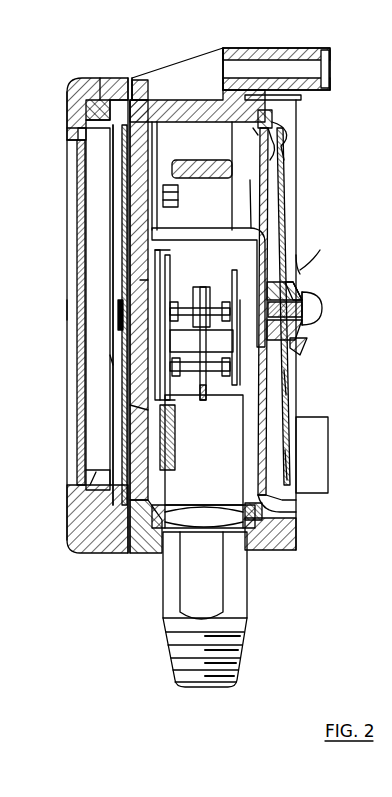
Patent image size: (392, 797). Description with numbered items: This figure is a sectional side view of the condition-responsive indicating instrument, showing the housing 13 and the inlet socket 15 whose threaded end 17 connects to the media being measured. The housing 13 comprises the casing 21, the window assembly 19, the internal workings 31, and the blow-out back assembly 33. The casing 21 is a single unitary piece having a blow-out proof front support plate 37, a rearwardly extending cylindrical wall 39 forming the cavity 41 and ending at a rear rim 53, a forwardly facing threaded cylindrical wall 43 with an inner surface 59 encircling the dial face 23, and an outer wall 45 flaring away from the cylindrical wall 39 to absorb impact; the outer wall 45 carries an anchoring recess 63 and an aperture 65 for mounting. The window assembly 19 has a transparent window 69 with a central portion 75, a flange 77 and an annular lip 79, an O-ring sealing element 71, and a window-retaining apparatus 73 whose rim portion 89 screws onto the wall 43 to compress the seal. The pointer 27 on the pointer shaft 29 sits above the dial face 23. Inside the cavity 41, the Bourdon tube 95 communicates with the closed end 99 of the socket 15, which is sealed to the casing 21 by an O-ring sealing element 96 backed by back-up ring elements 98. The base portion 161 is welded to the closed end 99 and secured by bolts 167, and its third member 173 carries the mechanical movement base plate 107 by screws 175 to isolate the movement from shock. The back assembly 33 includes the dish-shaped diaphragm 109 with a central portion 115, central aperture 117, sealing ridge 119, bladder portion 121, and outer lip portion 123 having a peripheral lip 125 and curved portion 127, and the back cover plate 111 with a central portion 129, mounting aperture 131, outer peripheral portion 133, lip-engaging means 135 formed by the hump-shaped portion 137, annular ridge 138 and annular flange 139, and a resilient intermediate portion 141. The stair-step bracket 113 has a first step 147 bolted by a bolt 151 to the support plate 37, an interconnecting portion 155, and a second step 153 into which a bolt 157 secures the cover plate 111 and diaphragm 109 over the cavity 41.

The housing 13 is at (375, 102).
The inlet socket 15 is at (268, 612).
The threaded end 17 is at (236, 664).
The window assembly 19 is at (62, 192).
The casing 21 is at (306, 44).
The dial face 23 is at (120, 385).
The pointer 27 is at (110, 360).
The pointer shaft 29 is at (118, 318).
The internal workings 31 is at (246, 360).
The blow-out back assembly 33 is at (312, 238).
The front support plate 37 is at (137, 78).
The cylindrical wall 39 is at (193, 108).
The cavity 41 is at (165, 135).
The threaded cylindrical wall 43 is at (93, 100).
The outer wall 45 is at (229, 44).
The rear rim 53 is at (300, 530).
The inner surface 59 is at (121, 553).
The anchoring recess 63 is at (198, 62).
The aperture 65 is at (276, 70).
The window 69 is at (64, 460).
The O-ring sealing element 71 is at (93, 553).
The window-retaining apparatus 73 is at (71, 68).
The central portion 75 is at (80, 429).
The flange 77 is at (78, 131).
The annular lip 79 is at (97, 135).
The rim portion 89 is at (104, 78).
The Bourdon tube 95 is at (186, 160).
The O-ring sealing element 96 is at (170, 520).
The back-up ring elements 98 is at (165, 540).
The closed end 99 is at (216, 486).
The mechanical movement base plate 107 is at (178, 412).
The diaphragm 109 is at (290, 158).
The back cover plate 111 is at (283, 177).
The bracket 113 is at (243, 232).
The central portion 115 is at (270, 275).
The central aperture 117 is at (302, 298).
The sealing ridge 119 is at (290, 288).
The bladder portion 121 is at (288, 380).
The outer lip portion 123 is at (254, 130).
The peripheral lip 125 is at (298, 510).
The curved portion 127 is at (298, 492).
The central portion 129 is at (306, 352).
The mounting aperture 131 is at (316, 298).
The outer peripheral portion 133 is at (300, 336).
The lip-engaging means 135 is at (290, 464).
The hump-shaped portion 137 is at (301, 97).
The annular ridge 138 is at (286, 138).
The annular flange 139 is at (272, 116).
The intermediate portion 141 is at (288, 198).
The first step 147 is at (178, 196).
The bolt 151 is at (140, 219).
The second step 153 is at (305, 268).
The interconnecting portion 155 is at (250, 228).
The bolt 157 is at (318, 312).
The base portion 161 is at (175, 445).
The bolts 167 is at (138, 281).
The third member 173 is at (160, 285).
The screws 175 is at (167, 266).